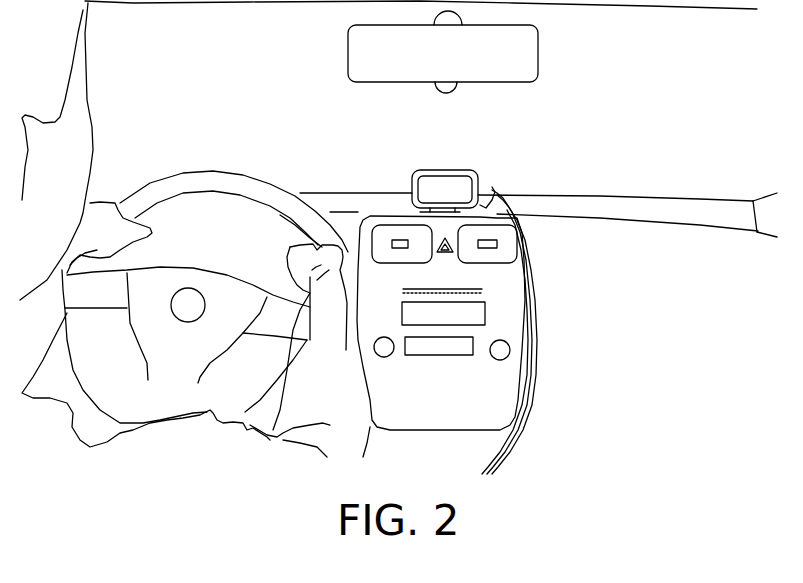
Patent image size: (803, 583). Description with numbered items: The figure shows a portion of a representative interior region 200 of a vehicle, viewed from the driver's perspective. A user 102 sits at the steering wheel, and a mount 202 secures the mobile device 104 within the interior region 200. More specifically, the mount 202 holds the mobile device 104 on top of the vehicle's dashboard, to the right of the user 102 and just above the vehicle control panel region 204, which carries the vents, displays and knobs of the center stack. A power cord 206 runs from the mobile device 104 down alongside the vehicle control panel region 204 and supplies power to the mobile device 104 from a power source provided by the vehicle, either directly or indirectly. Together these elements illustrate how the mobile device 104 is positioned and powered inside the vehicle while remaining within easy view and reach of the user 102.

The user 102 is at (145, 225).
The mobile device 104 is at (538, 191).
The interior region 200 is at (747, 87).
The mount 202 is at (399, 161).
The vehicle control panel region 204 is at (505, 336).
The power cord 206 is at (589, 330).